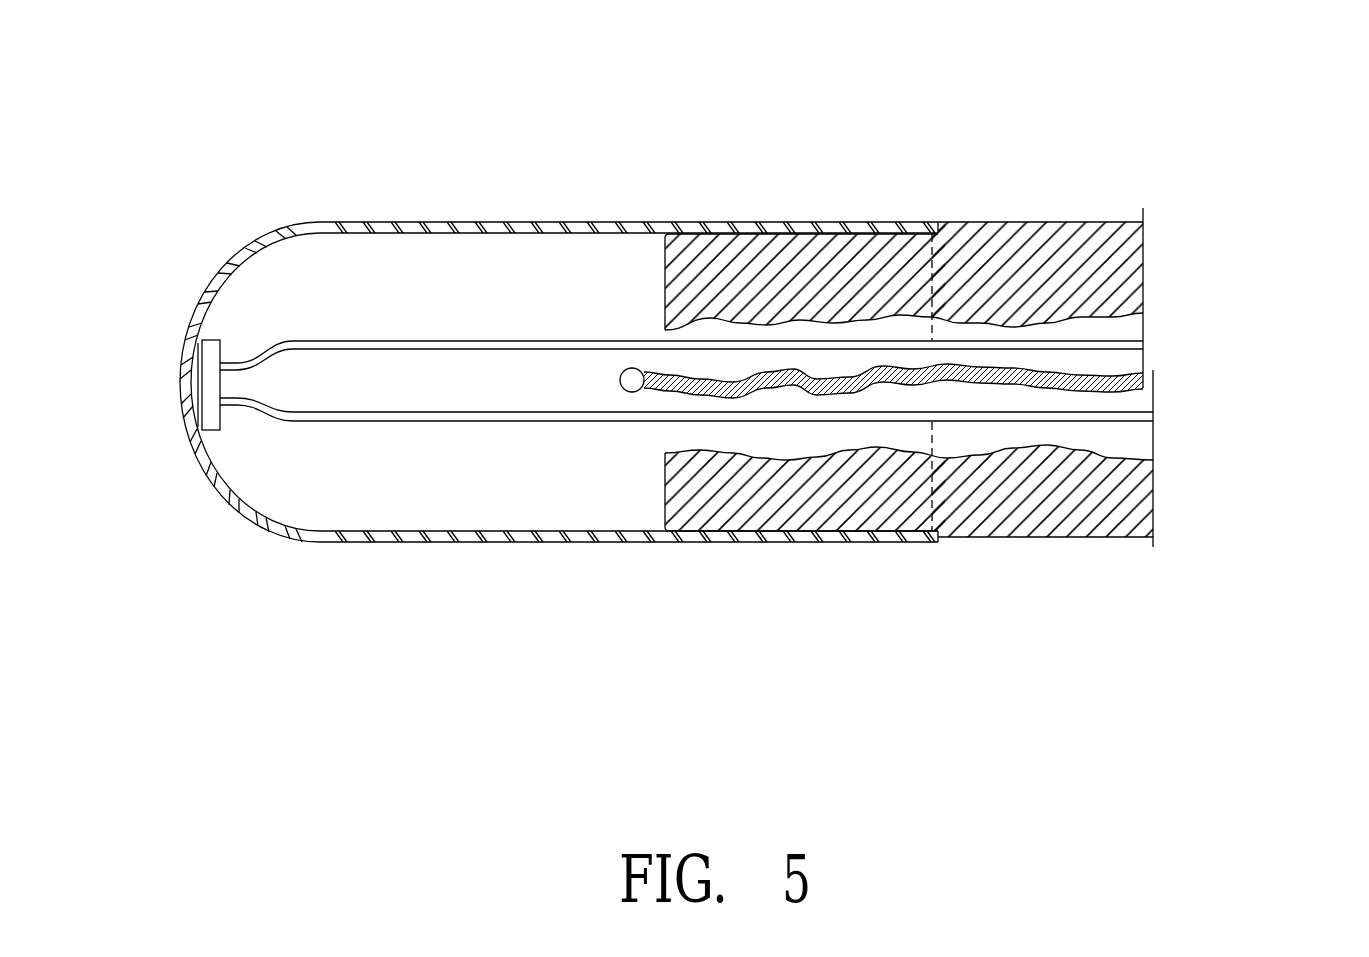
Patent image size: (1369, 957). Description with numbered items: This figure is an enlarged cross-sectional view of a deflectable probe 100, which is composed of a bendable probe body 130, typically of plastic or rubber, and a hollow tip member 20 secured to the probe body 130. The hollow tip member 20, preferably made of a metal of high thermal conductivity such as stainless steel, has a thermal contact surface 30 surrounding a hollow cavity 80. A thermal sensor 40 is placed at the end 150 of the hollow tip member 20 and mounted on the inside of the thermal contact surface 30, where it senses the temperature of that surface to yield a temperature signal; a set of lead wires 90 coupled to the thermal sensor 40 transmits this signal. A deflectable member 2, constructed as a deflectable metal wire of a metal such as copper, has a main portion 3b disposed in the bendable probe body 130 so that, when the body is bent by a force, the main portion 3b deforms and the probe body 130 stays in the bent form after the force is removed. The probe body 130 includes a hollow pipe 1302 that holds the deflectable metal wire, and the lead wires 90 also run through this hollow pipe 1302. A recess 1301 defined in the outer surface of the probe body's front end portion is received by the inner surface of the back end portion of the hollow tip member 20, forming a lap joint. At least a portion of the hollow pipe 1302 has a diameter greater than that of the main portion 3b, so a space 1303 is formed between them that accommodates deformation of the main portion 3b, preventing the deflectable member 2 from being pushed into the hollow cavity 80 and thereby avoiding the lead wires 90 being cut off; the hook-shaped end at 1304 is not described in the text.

The deflectable probe 100 is at (1007, 786).
The deflectable member 2 is at (1120, 366).
The main portion 3b is at (1052, 357).
The hollow tip member 20 is at (375, 224).
The thermal contact surface 30 is at (447, 540).
The thermal sensor 40 is at (212, 432).
The hollow cavity 80 is at (531, 388).
The lead wires 90 is at (485, 413).
The bendable probe body 130 is at (1008, 220).
The end 150 is at (212, 270).
The recess 1301 is at (748, 531).
The hollow pipe 1302 is at (765, 327).
The space 1303 is at (1103, 397).
The filament hook 1304 is at (632, 369).